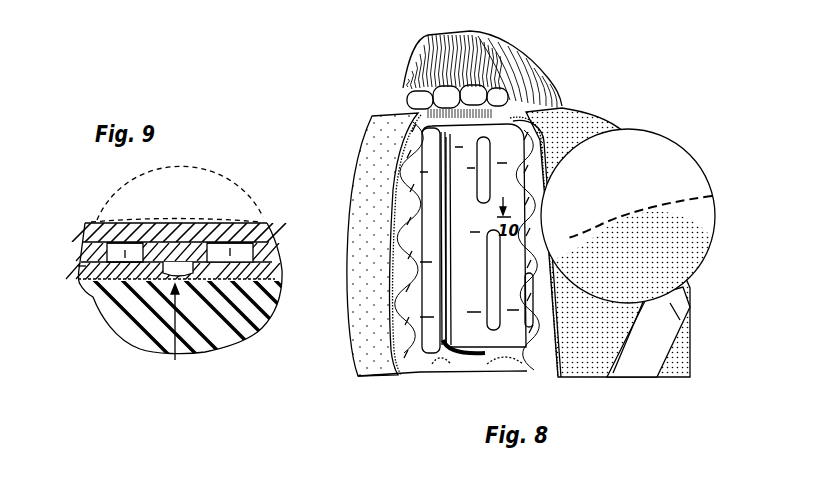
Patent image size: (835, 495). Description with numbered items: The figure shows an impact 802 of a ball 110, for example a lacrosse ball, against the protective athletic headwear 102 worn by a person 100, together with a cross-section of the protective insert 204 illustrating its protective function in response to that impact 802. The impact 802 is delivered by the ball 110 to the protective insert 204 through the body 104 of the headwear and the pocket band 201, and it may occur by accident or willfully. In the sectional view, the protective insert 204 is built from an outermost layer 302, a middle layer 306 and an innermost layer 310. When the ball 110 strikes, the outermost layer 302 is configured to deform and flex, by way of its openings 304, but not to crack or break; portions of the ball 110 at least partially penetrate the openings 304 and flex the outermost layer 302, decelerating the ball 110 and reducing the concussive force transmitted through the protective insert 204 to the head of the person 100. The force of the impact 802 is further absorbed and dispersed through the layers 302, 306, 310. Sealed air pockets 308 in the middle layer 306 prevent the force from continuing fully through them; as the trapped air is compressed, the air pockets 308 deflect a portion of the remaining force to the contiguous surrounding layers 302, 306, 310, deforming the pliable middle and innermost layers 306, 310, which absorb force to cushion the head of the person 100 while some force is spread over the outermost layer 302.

In FIG. 9, the person 100 is at (213, 193).
In FIG. 8, the protective athletic headwear 102 is at (579, 106).
In FIG. 9, the body 104 is at (125, 262).
In FIG. 8, the ball 110 is at (680, 148).
In FIG. 9, the ball 110 is at (235, 338).
In FIG. 9, the pocket band 201 is at (76, 270).
In FIG. 8, the protective insert 204 is at (484, 333).
In FIG. 9, the outermost layer 302 is at (282, 264).
In FIG. 9, the openings 304 is at (173, 243).
In FIG. 9, the middle layer 306 is at (253, 243).
In FIG. 9, the sealed air pockets 308 is at (122, 283).
In FIG. 9, the innermost layer 310 is at (264, 224).
In FIG. 8, the impact 802 is at (712, 196).
In FIG. 9, the impact 802 is at (177, 335).